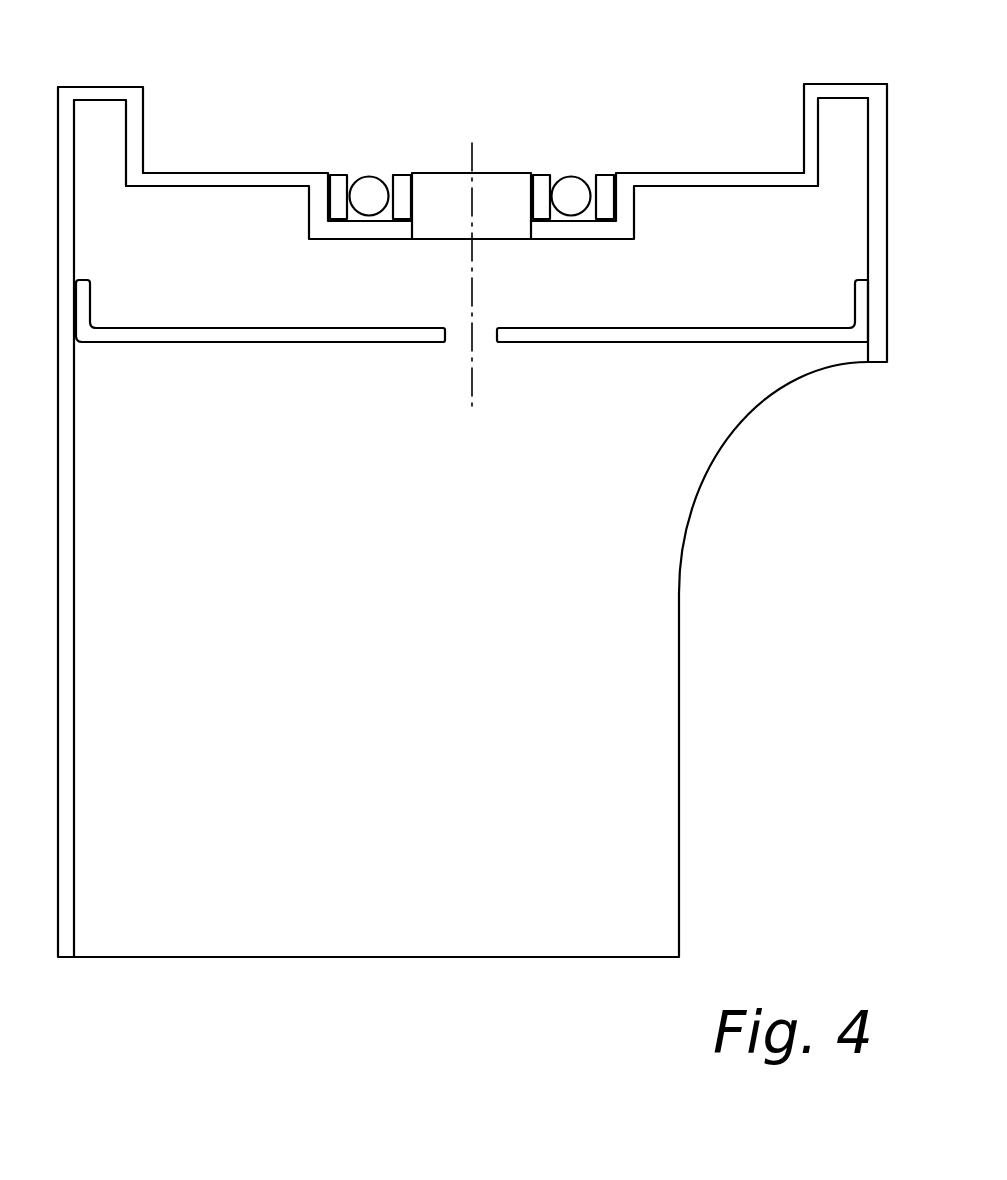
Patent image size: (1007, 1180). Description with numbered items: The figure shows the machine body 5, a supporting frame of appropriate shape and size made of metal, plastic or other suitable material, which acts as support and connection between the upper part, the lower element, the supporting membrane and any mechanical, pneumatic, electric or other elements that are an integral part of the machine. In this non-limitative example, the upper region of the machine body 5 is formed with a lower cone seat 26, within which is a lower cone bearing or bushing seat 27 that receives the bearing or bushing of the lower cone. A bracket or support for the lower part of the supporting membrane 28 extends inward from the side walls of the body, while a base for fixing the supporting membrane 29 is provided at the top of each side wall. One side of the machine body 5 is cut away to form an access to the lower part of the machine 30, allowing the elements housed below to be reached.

The machine body 5 is at (440, 99).
The lower cone seat 26 is at (264, 162).
The lower cone bearing or bushing seat 27 is at (491, 192).
The bracket or support for the lower part of the supporting membrane 28 is at (292, 342).
The base for fixing the supporting membrane 29 is at (105, 87).
The access to the lower part of the machine 30 is at (679, 585).